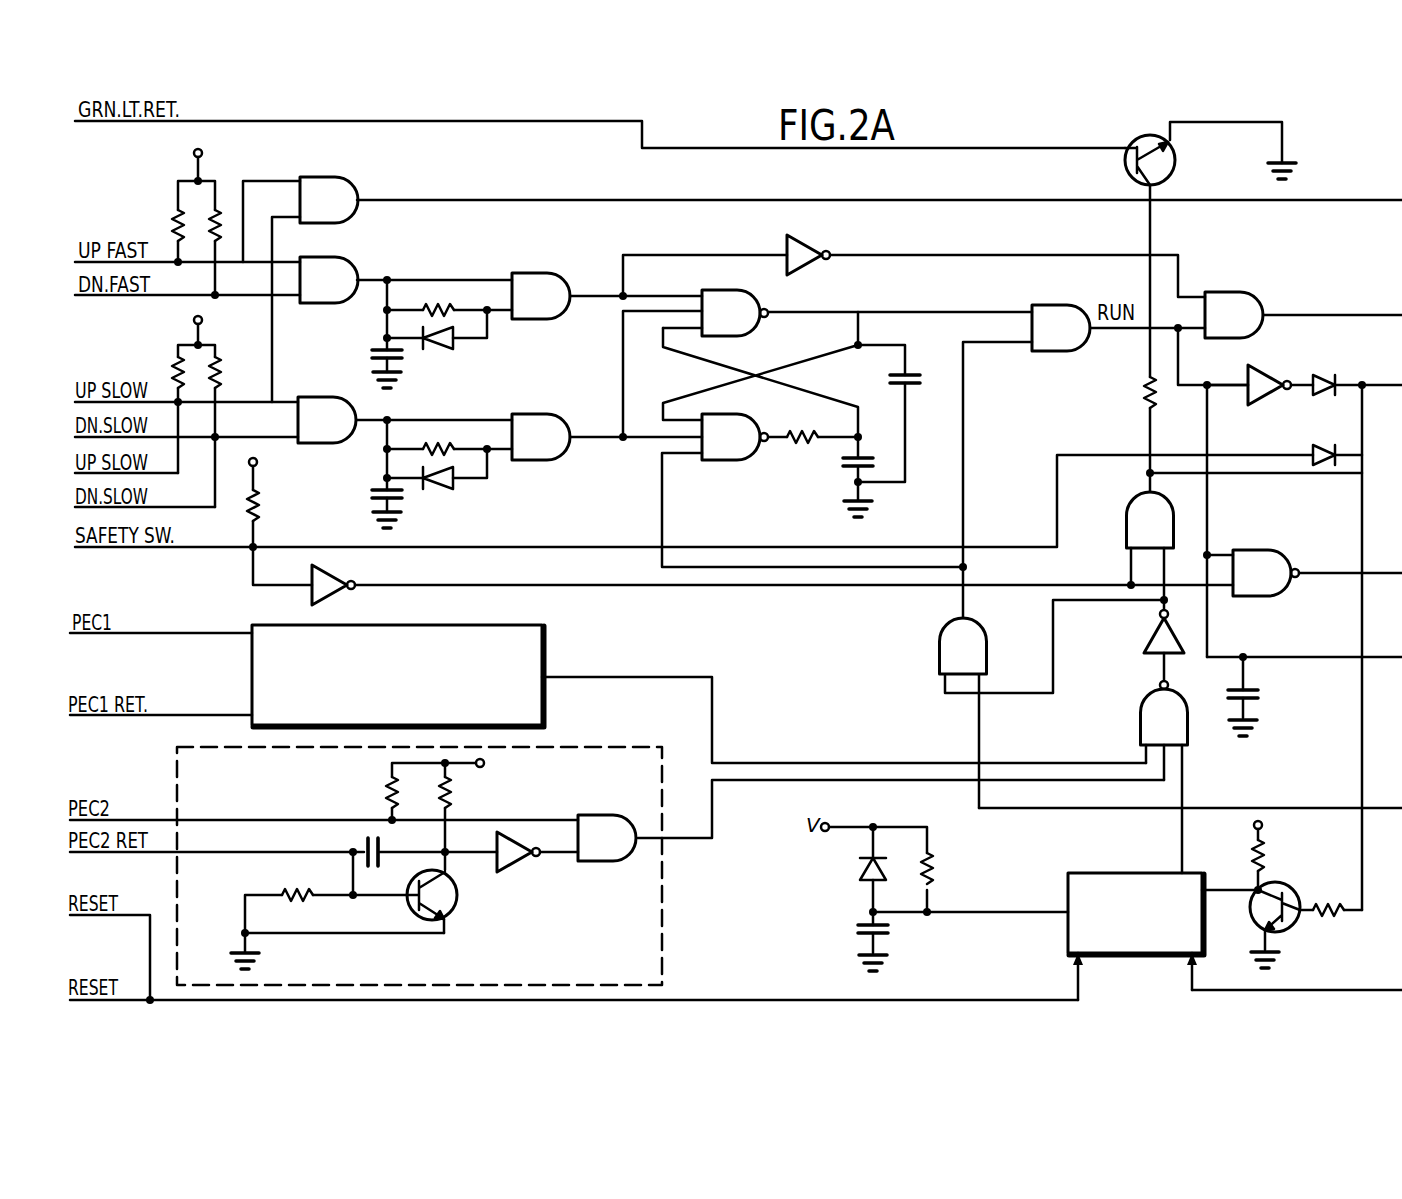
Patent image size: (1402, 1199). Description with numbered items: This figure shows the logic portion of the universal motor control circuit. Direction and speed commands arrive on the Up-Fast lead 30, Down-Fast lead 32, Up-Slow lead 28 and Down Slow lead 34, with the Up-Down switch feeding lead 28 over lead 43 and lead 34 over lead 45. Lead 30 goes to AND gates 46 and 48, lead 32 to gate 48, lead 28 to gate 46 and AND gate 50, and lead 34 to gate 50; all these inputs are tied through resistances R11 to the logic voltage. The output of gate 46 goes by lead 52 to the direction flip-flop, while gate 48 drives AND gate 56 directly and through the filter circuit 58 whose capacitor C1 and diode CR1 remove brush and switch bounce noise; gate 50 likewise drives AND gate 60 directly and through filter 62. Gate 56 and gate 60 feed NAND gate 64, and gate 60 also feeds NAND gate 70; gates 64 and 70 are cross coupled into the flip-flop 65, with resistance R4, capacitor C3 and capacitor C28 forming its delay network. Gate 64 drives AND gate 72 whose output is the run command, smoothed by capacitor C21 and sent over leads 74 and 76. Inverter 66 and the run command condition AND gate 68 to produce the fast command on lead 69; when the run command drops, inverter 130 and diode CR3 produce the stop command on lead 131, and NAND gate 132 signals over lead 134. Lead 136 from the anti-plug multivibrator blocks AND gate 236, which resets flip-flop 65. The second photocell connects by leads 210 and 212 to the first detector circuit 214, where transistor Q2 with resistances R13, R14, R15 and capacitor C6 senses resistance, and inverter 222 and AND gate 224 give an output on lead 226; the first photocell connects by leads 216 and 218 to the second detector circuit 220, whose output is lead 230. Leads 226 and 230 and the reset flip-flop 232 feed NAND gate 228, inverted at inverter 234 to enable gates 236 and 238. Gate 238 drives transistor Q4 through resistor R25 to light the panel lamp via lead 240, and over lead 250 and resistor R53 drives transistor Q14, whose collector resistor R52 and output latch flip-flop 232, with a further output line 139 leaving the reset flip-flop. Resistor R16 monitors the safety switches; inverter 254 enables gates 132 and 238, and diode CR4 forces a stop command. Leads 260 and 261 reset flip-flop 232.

The lead 240 is at (407, 122).
The AND gate 46 is at (332, 177).
The AND gate 48 is at (355, 265).
The resistances R11 is at (178, 214).
The lead 30 is at (213, 263).
The lead 32 is at (229, 297).
The Up-Slow input lead 28 is at (236, 401).
The Down Slow input lead 34 is at (242, 420).
The AND gate 50 is at (318, 406).
The lead 43 is at (178, 456).
The lead 45 is at (193, 512).
The resistor R16 is at (283, 493).
The lead 250 is at (168, 549).
The inverter 254 is at (338, 572).
The AND gate 56 is at (520, 273).
The resistance-capacitance-diode filter circuit 58 is at (487, 325).
The diode CR1 is at (441, 349).
The capacitor C1 is at (382, 348).
The AND gate 60 is at (562, 452).
The filter 62 is at (487, 478).
The inverter 66 is at (788, 246).
The NAND gate 64 is at (764, 300).
The flip-flop 65 is at (775, 362).
The NAND gate 70 is at (744, 421).
The resistance R4 is at (802, 441).
The capacitor C3 is at (852, 471).
The capacitor C28 is at (914, 388).
The AND gate 72 is at (1038, 304).
The resistor R25 is at (1143, 392).
The lead 74 is at (1180, 354).
The AND gate 238 is at (1125, 512).
The grounded emitter transistor Q4 is at (1176, 167).
The lead 52 is at (538, 201).
The AND gate 68 is at (1245, 293).
The lead 69 is at (1336, 313).
The inverter 130 is at (1260, 366).
The diode CR3 is at (1327, 374).
The lead 131 is at (1384, 385).
The diode CR4 is at (1322, 446).
The lead 134 is at (1384, 572).
The NAND gate 132 is at (1257, 550).
The lead 76 is at (1295, 657).
The capacitor C21 is at (1260, 700).
The inverter 234 is at (1144, 652).
The NAND gate 228 is at (1141, 735).
The lead 230 is at (585, 679).
The lead 226 is at (690, 840).
The AND gate 236 is at (985, 645).
The lead 136 is at (1383, 808).
The reset flip-flop 232 is at (1066, 876).
The resistor R52 is at (1254, 846).
The grounded emitter transistor Q14 is at (1290, 892).
The resistor R53 is at (1328, 918).
The output line 139 is at (1322, 992).
The lead 216 is at (200, 635).
The lead 218 is at (224, 716).
The second detector circuit 220 is at (402, 683).
The lead 210 is at (158, 821).
The lead 212 is at (134, 854).
The capacitor C6 is at (358, 843).
The first detector circuit 214 is at (636, 747).
The resistance R13 is at (387, 792).
The resistance R14 is at (455, 792).
The inverter 222 is at (516, 862).
The AND gate 224 is at (606, 816).
The ground emitter transistor Q2 is at (456, 913).
The resistance R15 is at (312, 896).
The lead 261 is at (128, 917).
The lead 260 is at (133, 998).